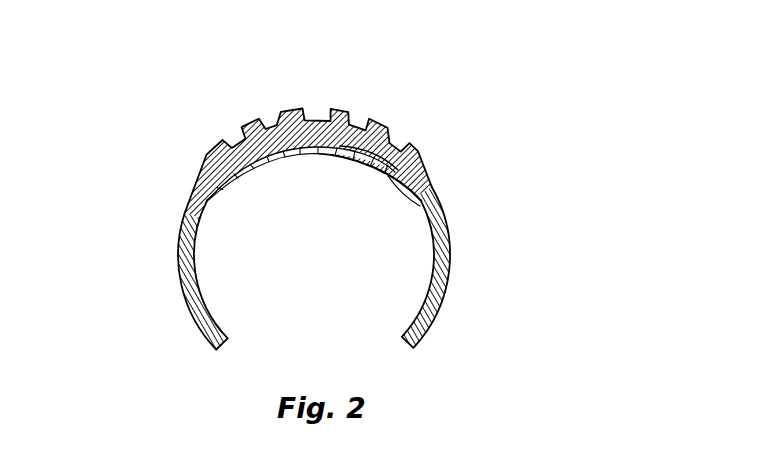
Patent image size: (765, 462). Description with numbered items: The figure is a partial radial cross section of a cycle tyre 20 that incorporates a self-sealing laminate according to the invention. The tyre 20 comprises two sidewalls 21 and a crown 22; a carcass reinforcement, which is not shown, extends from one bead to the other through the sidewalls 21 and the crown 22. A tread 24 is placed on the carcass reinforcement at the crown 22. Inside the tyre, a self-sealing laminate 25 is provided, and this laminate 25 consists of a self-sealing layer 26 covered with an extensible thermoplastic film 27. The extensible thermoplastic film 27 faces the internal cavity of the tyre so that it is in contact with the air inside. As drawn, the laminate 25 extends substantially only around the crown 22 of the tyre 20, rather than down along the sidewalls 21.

The tyre 20 is at (422, 112).
The sidewalls 21 is at (192, 277).
The crown 22 is at (308, 139).
The tread 24 is at (352, 118).
The self-sealing laminate 25 is at (310, 172).
The self-sealing layer 26 is at (407, 162).
The extensible thermoplastic film 27 is at (392, 187).